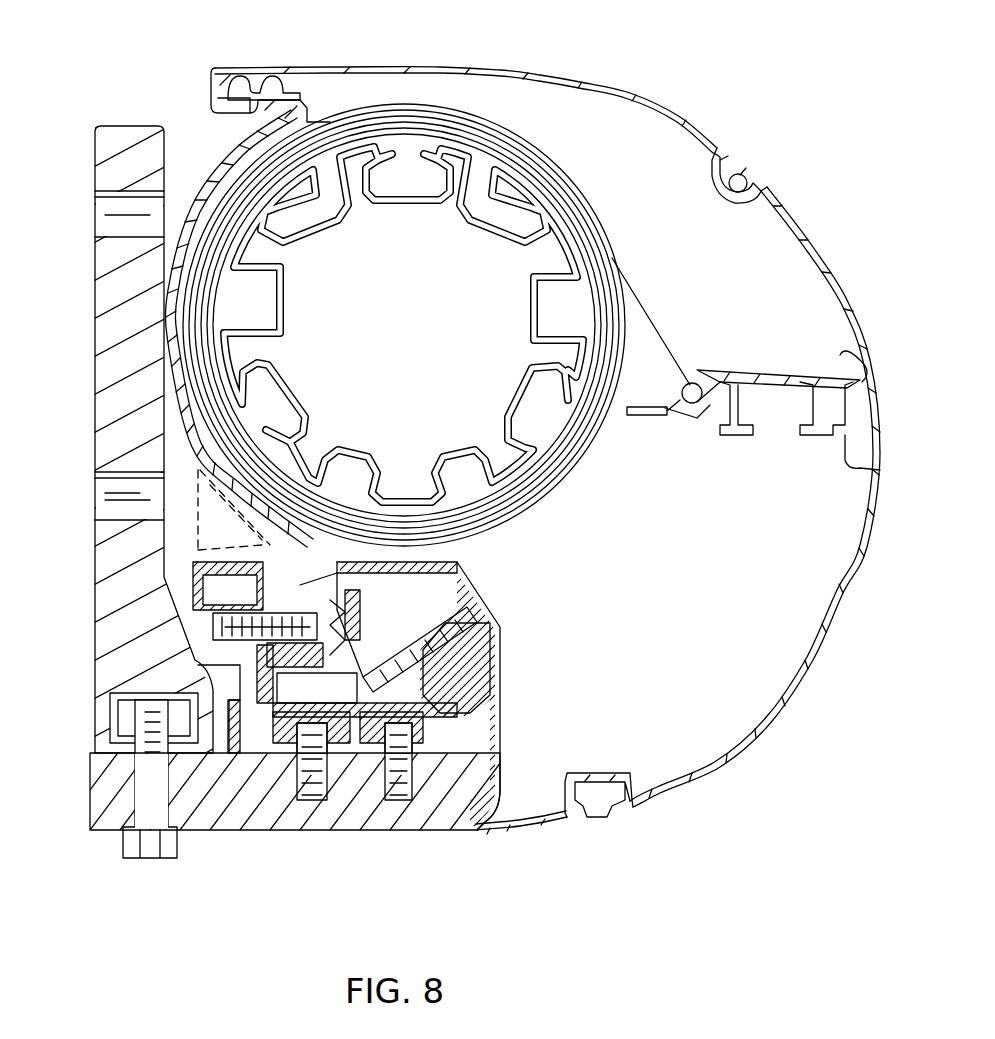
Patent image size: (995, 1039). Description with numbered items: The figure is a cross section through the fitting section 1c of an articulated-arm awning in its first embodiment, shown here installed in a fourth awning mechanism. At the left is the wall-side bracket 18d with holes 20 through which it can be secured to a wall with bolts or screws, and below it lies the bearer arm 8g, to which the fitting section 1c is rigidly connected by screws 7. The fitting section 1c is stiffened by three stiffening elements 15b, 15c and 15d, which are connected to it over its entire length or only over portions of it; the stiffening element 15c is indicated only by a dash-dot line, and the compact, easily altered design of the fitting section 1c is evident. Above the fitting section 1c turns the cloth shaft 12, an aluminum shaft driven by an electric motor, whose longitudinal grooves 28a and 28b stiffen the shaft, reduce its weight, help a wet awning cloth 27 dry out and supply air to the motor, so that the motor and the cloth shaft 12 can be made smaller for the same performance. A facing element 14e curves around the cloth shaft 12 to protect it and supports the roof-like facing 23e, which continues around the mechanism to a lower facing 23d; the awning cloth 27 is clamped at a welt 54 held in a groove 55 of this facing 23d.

The roof-like facing 23e is at (430, 67).
The facing 23d is at (538, 832).
The facing element 14e is at (246, 158).
The cloth shaft 12 is at (411, 361).
The groove 28a is at (560, 305).
The groove 28b is at (540, 410).
The awning cloth 27 is at (655, 335).
The welt 54 is at (697, 383).
The groove 55 is at (700, 420).
The holes 20 is at (108, 205).
The support block 18d is at (118, 640).
The base plate 8g is at (205, 805).
The stiffening element 15d is at (220, 757).
The stiffening element 15c is at (265, 545).
The stiffening element 15b is at (477, 661).
The fitting section 1c is at (352, 770).
The screws 7 is at (400, 835).